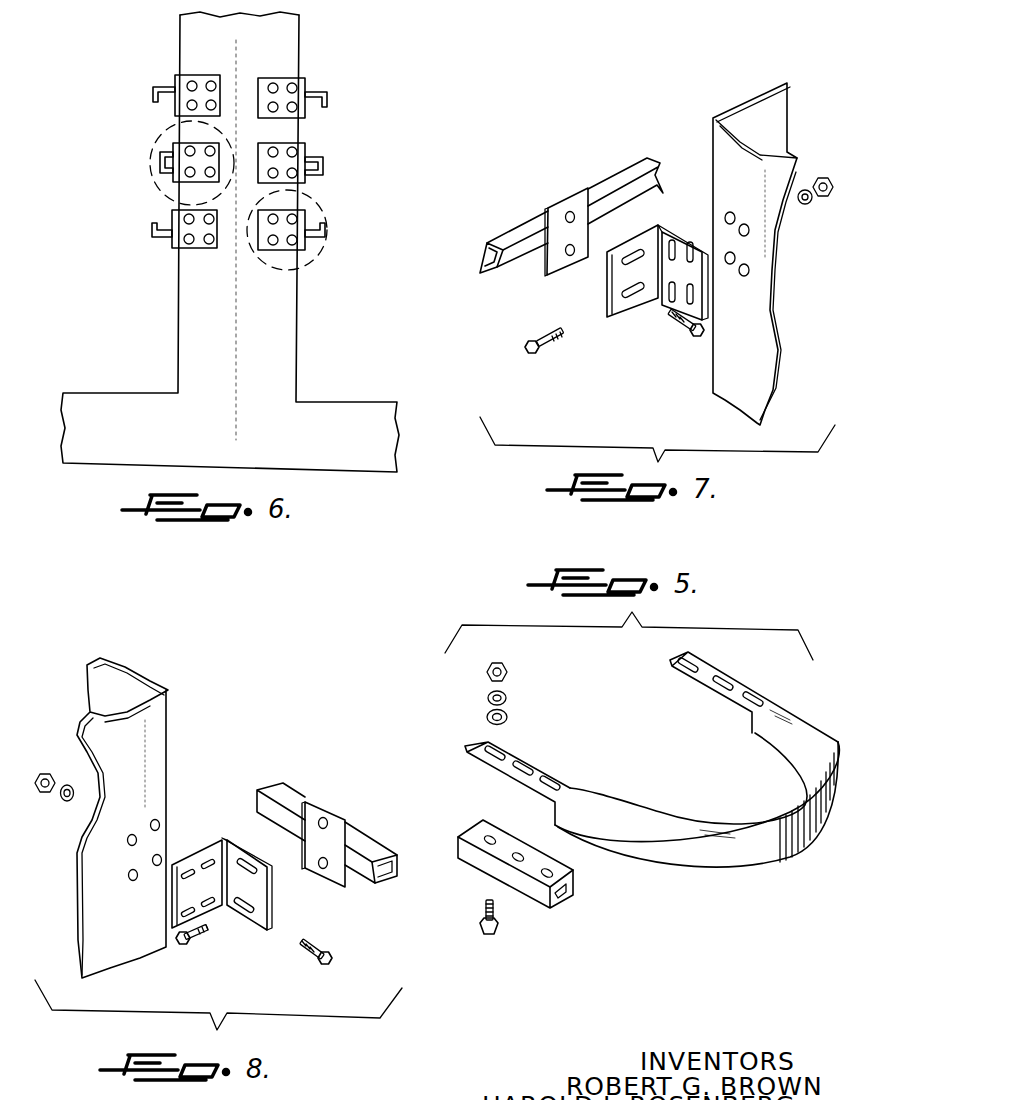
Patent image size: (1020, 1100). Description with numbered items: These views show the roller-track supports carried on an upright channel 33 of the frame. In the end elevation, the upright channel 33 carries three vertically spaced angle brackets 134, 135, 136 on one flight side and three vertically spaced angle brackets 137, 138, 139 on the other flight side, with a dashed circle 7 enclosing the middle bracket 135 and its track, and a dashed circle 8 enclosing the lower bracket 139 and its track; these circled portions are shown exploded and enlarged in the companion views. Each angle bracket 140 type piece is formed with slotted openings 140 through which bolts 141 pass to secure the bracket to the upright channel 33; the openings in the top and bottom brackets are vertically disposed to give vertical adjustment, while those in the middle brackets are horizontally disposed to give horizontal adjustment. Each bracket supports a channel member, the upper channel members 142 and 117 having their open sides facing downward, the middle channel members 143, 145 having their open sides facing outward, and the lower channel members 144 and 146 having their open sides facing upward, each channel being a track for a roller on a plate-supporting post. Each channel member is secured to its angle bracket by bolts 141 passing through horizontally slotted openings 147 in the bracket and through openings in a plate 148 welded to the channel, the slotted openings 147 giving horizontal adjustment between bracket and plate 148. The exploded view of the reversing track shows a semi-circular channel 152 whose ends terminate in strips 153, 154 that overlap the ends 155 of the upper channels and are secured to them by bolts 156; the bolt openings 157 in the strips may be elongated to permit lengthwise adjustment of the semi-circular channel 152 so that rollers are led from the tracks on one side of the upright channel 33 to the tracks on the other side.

In FIG. 6, the circle 7 is at (150, 165).
In FIG. 6, the circle 8 is at (322, 255).
In FIG. 6, the upright channel 33 is at (285, 363).
In FIG. 7, the upright channel 33 is at (718, 142).
In FIG. 8, the upright channel 33 is at (157, 727).
In FIG. 6, the channel member 117 is at (327, 92).
In FIG. 6, the angle bracket 134 is at (205, 75).
In FIG. 6, the angle bracket 135 is at (190, 182).
In FIG. 7, the angle bracket 135 is at (633, 307).
In FIG. 6, the angle bracket 136 is at (200, 250).
In FIG. 6, the angle bracket 137 is at (278, 78).
In FIG. 6, the angle bracket 138 is at (285, 143).
In FIG. 6, the angle bracket 139 is at (285, 210).
In FIG. 8, the angle bracket 139 is at (232, 842).
In FIG. 7, the slotted opening 140 is at (660, 230).
In FIG. 8, the slotted opening 140 is at (253, 871).
In FIG. 7, the bolt 141 is at (535, 356).
In FIG. 8, the bolt 141 is at (300, 950).
In FIG. 6, the channel member 142 is at (165, 87).
In FIG. 6, the channel member 143 is at (163, 152).
In FIG. 7, the channel member 143 is at (527, 227).
In FIG. 6, the channel member 144 is at (152, 233).
In FIG. 6, the channel member 145 is at (323, 163).
In FIG. 6, the channel member 146 is at (327, 232).
In FIG. 8, the channel member 146 is at (365, 835).
In FIG. 8, the slotted opening 147 is at (233, 893).
In FIG. 7, the plate 148 is at (578, 203).
In FIG. 8, the plate 148 is at (310, 803).
In FIG. 5, the semi-circular channel 152 is at (652, 777).
In FIG. 5, the strip 153 is at (549, 775).
In FIG. 5, the strip 154 is at (722, 682).
In FIG. 5, the end of channel 155 is at (545, 900).
In FIG. 5, the bolt 156 is at (490, 940).
In FIG. 5, the bolt opening 157 is at (563, 786).